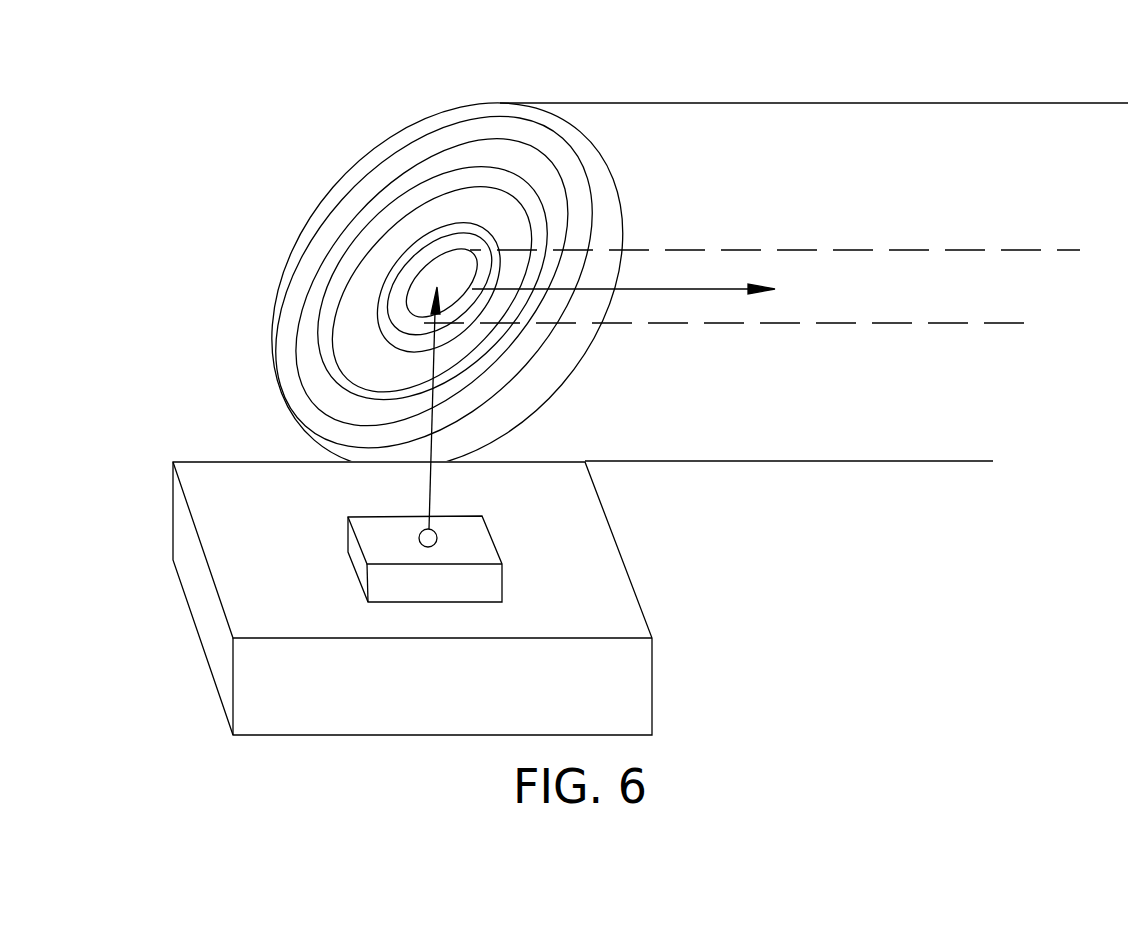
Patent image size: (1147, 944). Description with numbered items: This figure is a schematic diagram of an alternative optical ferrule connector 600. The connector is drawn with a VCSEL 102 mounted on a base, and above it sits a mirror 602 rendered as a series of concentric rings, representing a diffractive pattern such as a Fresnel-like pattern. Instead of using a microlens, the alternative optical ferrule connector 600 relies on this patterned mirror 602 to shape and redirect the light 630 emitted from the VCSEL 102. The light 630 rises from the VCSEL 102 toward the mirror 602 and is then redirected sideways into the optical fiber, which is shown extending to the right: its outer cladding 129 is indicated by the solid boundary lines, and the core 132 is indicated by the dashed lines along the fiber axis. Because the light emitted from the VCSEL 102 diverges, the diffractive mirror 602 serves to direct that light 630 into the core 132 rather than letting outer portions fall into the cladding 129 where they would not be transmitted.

The alternative optical ferrule connector 600 is at (238, 163).
The mirror 602 is at (353, 298).
The light 630 is at (428, 497).
The VCSEL 102 is at (258, 566).
The cladding 129 is at (862, 408).
The core 132 is at (977, 283).